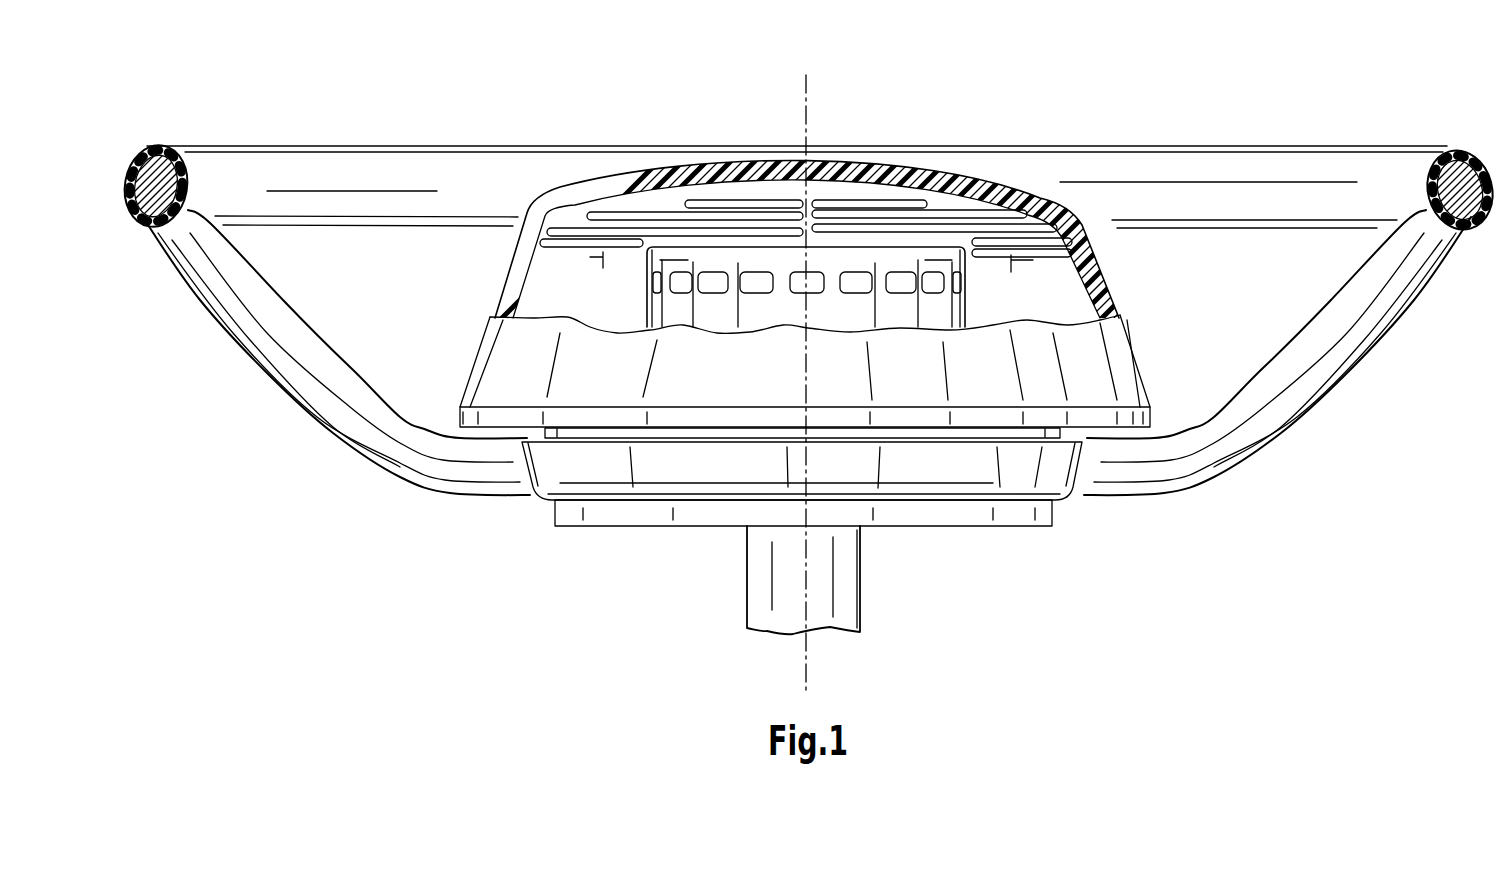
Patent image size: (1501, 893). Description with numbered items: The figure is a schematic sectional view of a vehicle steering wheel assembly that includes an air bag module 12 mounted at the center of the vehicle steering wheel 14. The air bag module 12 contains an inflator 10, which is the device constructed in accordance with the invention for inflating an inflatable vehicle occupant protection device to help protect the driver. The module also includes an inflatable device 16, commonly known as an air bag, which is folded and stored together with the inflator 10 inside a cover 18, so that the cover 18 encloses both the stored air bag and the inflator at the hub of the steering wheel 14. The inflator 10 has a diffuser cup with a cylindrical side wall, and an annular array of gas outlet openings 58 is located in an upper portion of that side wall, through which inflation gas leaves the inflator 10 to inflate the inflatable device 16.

The inflator 10 is at (962, 229).
The air bag module 12 is at (430, 273).
The vehicle steering wheel 14 is at (370, 137).
The inflatable device 16 is at (900, 213).
The cover 18 is at (688, 173).
The gas outlet openings 58 is at (653, 283).